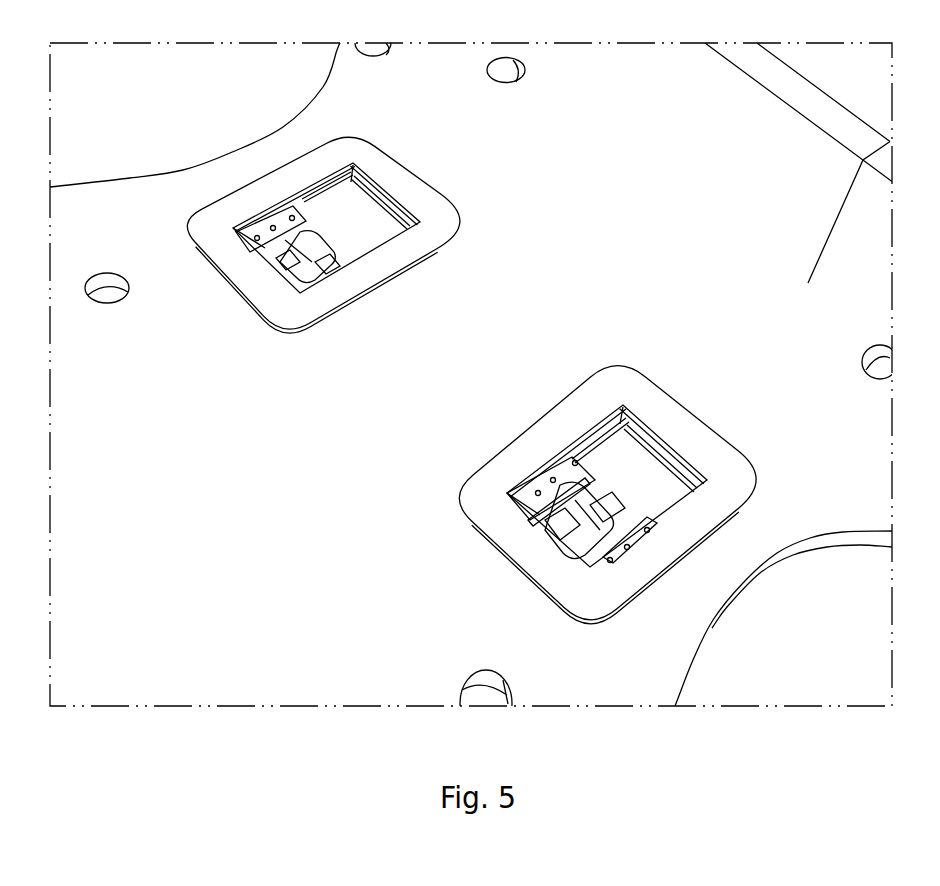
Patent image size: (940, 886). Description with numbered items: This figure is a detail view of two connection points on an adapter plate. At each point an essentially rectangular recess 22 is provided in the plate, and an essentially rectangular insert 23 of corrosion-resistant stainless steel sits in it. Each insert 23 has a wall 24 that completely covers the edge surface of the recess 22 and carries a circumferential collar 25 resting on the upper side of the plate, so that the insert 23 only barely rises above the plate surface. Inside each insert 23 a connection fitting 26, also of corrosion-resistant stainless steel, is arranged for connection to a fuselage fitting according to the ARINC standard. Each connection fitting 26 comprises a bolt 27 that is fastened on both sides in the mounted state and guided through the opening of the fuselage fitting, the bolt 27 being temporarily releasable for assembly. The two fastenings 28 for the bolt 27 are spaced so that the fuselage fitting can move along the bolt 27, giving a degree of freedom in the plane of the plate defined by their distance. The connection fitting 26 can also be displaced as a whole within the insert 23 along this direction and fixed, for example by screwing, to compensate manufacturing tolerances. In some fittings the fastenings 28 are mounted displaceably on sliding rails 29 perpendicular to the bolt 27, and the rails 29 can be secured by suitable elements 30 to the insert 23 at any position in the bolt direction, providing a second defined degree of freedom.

The recess 22 is at (365, 238).
The insert 23 is at (390, 145).
The wall 24 is at (328, 183).
The circumferential collar 25 is at (400, 178).
The connection fitting 26 is at (247, 259).
The bolt 27 is at (321, 265).
The fastening 28 is at (281, 283).
The sliding rail 29 is at (575, 487).
The fastening element 30 is at (543, 487).